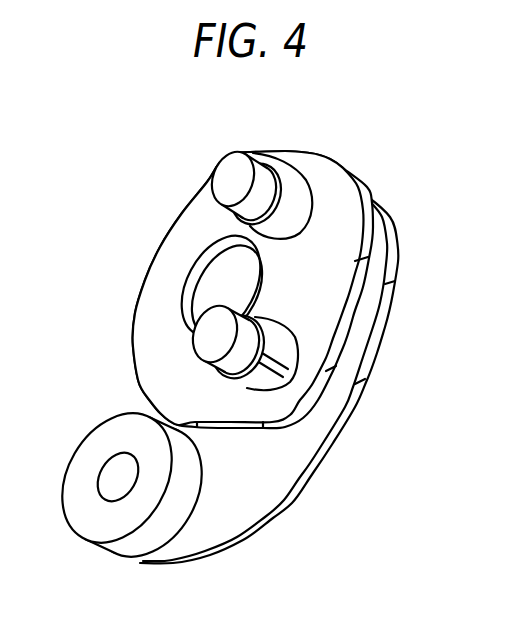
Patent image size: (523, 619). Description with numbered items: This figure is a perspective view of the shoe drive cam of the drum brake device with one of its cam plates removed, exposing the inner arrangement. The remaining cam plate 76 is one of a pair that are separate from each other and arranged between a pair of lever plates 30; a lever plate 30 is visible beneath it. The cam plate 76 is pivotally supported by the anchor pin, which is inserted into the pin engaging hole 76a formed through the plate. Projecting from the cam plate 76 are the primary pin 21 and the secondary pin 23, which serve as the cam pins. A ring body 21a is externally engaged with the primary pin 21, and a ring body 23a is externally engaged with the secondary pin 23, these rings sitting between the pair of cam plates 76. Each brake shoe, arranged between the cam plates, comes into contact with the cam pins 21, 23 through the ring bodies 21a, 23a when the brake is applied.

The primary pin 21 is at (232, 172).
The ring body 21a is at (295, 190).
The secondary pin 23 is at (196, 341).
The ring body 23a is at (263, 380).
The cam plate 76 is at (313, 322).
The pin engaging hole 76a is at (190, 293).
The lever plate 30 is at (260, 473).